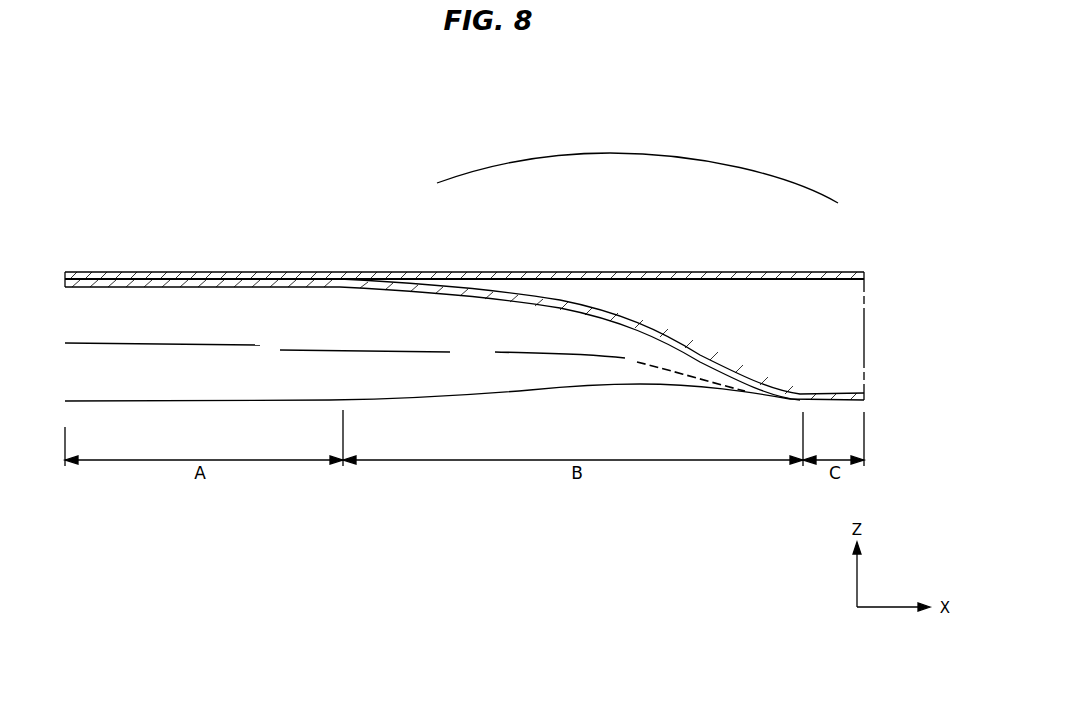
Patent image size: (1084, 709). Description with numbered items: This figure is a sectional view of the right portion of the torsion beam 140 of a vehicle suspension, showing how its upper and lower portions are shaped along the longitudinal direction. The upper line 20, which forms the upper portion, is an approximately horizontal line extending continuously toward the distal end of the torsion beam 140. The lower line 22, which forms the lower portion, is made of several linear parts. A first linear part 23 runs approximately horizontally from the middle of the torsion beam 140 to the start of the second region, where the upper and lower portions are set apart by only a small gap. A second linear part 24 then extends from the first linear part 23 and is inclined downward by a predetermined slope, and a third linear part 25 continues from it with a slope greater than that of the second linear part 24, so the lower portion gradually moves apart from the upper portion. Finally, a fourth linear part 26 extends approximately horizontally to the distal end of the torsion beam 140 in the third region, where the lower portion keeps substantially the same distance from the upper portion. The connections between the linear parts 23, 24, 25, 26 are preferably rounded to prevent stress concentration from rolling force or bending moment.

The torsion beam 140 is at (111, 266).
The upper line 20 is at (172, 278).
The lower line 22 is at (637, 169).
The first linear part 23 is at (257, 287).
The second linear part 24 is at (505, 297).
The third linear part 25 is at (735, 364).
The fourth linear part 26 is at (840, 395).